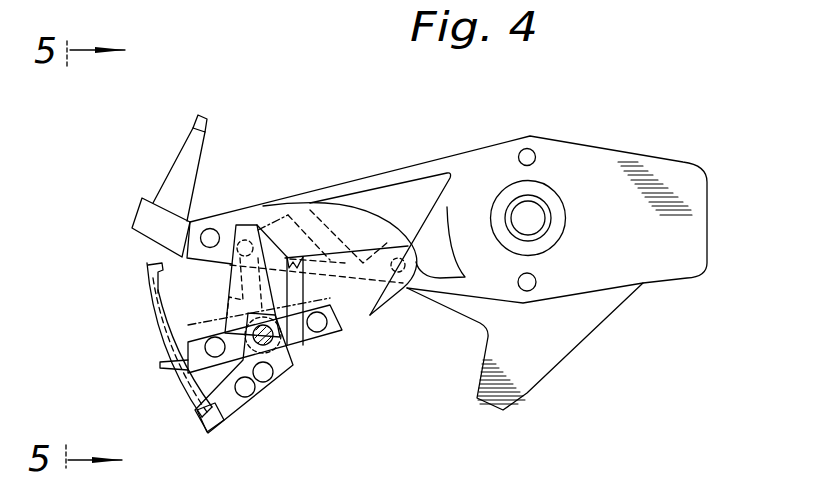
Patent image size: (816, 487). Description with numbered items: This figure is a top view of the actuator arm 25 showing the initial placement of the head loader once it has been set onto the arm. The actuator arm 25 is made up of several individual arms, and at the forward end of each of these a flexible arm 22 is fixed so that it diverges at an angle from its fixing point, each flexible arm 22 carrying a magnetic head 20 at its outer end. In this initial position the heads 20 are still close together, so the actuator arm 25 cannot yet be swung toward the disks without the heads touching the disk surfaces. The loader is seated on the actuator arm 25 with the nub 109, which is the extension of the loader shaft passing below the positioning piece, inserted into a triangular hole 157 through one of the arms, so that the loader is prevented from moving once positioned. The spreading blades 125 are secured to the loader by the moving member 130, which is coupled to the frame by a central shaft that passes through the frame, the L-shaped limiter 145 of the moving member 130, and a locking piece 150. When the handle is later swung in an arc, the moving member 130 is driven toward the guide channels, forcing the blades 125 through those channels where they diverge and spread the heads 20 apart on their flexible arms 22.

The magnetic head 20 is at (208, 125).
The flexible arm 22 is at (180, 160).
The actuator arm 25 is at (428, 165).
The nub 109 is at (405, 272).
The spreading blade 125 is at (183, 387).
The moving member 130 is at (230, 410).
The L-shaped limiter 145 is at (237, 226).
The locking piece 150 is at (258, 224).
The triangular hole 157 is at (448, 208).